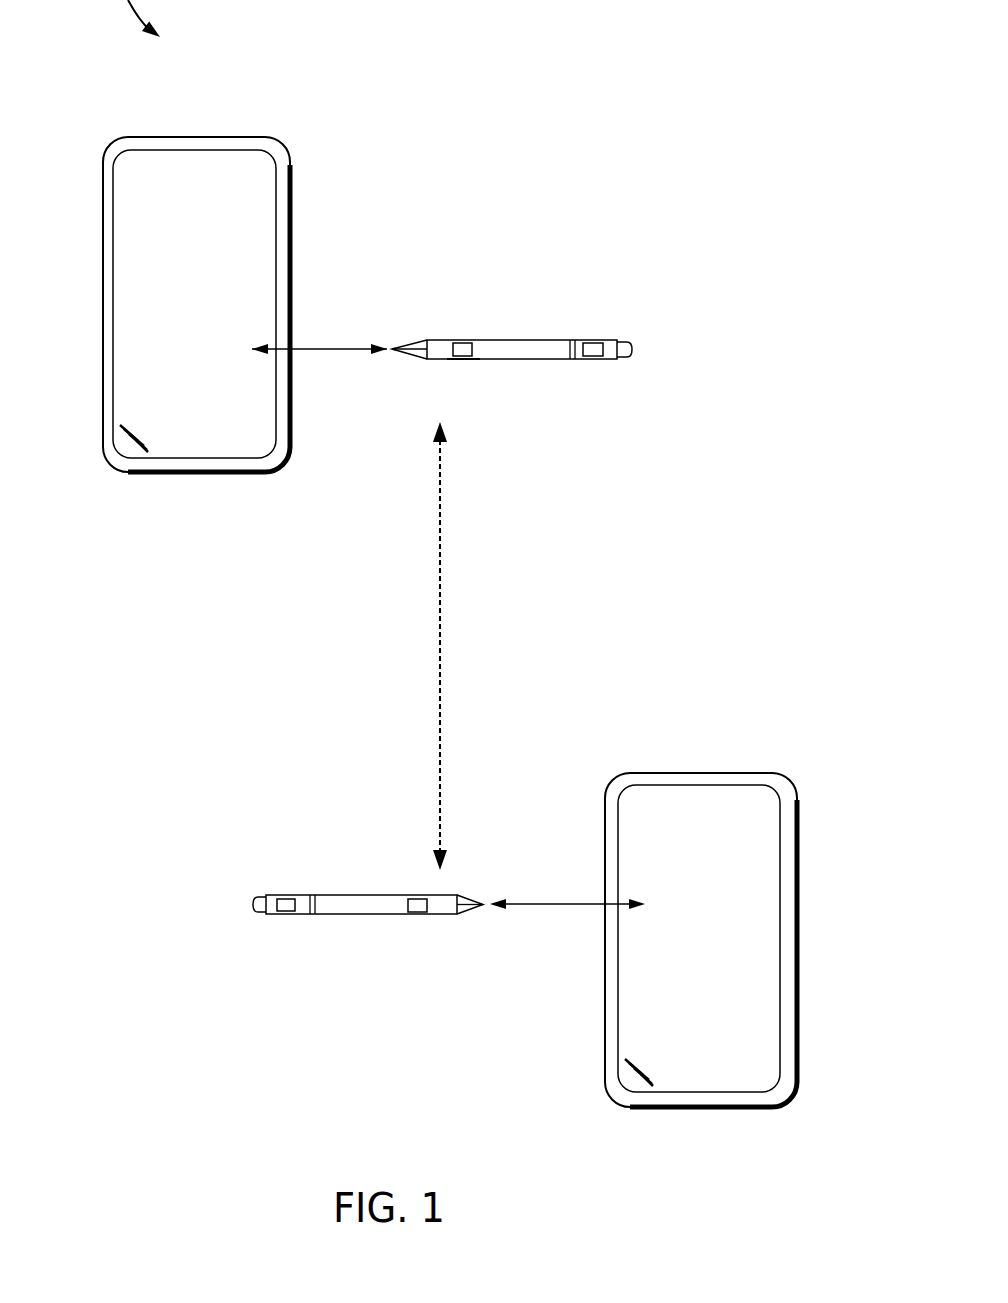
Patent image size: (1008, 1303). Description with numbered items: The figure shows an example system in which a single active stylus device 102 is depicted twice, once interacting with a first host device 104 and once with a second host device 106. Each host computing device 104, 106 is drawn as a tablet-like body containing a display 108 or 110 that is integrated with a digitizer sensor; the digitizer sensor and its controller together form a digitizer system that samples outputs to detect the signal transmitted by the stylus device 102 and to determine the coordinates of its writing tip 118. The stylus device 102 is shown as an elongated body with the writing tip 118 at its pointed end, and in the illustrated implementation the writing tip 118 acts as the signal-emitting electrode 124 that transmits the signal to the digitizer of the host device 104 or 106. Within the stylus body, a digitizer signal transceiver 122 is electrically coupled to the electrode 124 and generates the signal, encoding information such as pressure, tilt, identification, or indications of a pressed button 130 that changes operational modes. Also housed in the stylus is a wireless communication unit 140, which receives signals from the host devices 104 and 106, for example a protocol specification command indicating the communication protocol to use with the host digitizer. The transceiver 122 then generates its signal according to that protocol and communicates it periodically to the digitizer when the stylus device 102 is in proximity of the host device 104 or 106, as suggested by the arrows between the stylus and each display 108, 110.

The stylus device 102 is at (586, 299).
The host device 104 is at (263, 137).
The host device 106 is at (712, 772).
The display 108 is at (277, 197).
The display 110 is at (772, 790).
The writing tip 118 is at (423, 306).
The digitizer signal transceiver 122 is at (462, 342).
The electrode 124 is at (397, 343).
The button 130 is at (458, 359).
The wireless communication unit 140 is at (597, 358).